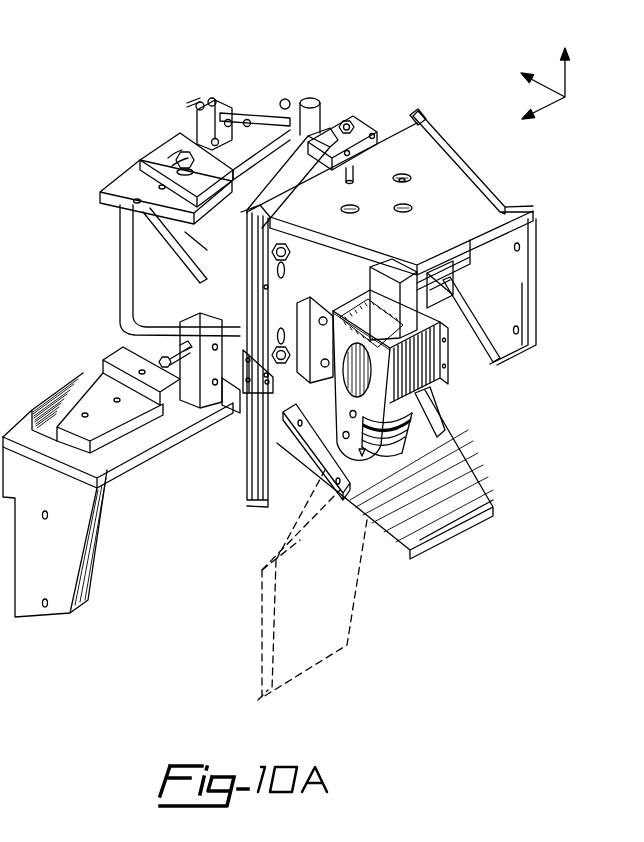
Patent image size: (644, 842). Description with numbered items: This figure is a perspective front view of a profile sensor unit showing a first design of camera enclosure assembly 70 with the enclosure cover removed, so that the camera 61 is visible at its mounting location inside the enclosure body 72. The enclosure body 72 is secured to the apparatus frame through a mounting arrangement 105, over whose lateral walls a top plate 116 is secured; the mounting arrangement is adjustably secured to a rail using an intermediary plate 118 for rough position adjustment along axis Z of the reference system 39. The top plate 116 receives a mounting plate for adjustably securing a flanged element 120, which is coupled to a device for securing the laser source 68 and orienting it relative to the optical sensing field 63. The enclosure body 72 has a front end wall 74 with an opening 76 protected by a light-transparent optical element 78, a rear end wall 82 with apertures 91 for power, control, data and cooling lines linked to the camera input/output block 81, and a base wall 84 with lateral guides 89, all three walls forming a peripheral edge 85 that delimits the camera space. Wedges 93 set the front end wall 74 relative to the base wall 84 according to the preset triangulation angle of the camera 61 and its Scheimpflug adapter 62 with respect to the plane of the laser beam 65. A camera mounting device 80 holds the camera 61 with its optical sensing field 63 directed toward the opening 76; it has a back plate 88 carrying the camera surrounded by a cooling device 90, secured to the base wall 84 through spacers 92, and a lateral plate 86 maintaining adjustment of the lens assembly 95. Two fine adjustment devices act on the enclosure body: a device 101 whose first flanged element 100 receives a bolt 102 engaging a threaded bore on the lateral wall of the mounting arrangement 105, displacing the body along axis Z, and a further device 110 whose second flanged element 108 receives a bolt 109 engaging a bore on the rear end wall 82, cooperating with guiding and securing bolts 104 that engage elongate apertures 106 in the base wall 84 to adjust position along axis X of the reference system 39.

The reference system 39 is at (567, 85).
The camera 61 is at (405, 330).
The Scheimpflug adapter 62 is at (432, 428).
The optical sensing field 63 is at (327, 613).
The laser beam 65 is at (257, 612).
The laser source 68 is at (303, 100).
The camera enclosure assembly 70 is at (516, 174).
The enclosure body 72 is at (437, 130).
The front end wall 74 is at (470, 481).
The opening 76 is at (402, 485).
The optical element 78 is at (373, 460).
The camera mounting device 80 is at (319, 389).
The camera input/output block 81 is at (420, 310).
The rear end wall 82 is at (434, 188).
The base wall 84 is at (337, 267).
The peripheral edge 85 is at (445, 272).
The lateral plate 86 is at (340, 420).
The back plate 88 is at (440, 340).
The lateral guides 89 is at (240, 432).
The cooling device 90 is at (440, 367).
The apertures 91 is at (403, 177).
The spacers 92 is at (330, 290).
The wedges 93 is at (433, 408).
The lens assembly 95 is at (433, 500).
The first flanged element 100 is at (190, 335).
The device 101 is at (181, 385).
The bolt 102 is at (160, 360).
The guiding and securing bolts 104 is at (275, 240).
The mounting arrangement 105 is at (108, 277).
The elongate apertures 106 is at (275, 264).
The second flanged element 108 is at (330, 140).
The bolt 109 is at (352, 207).
The further device 110 is at (349, 112).
The top plate 116 is at (124, 182).
The intermediary plate 118 is at (165, 152).
The flanged element 120 is at (220, 93).